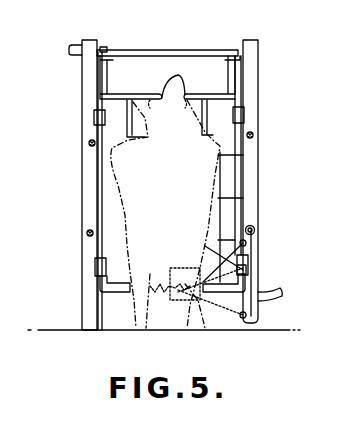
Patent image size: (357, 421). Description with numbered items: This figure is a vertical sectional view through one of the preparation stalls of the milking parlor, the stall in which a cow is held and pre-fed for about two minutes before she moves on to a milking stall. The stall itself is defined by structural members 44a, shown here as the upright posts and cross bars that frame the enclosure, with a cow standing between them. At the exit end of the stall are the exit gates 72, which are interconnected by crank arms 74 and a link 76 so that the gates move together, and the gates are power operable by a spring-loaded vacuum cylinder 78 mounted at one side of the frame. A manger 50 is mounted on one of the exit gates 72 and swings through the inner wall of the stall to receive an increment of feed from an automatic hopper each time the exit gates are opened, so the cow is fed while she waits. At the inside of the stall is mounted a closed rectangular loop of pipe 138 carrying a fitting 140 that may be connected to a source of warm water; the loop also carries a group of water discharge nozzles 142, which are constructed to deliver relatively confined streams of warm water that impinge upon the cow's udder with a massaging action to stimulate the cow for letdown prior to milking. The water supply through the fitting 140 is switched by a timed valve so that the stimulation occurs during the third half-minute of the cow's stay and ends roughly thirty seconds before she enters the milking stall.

The spring-loaded vacuum cylinder 78 is at (72, 45).
The link 76 is at (163, 50).
The crank arms 74 is at (107, 60).
The exit gates 72 is at (176, 78).
The structural members 44a is at (89, 143).
The manger 50 is at (227, 178).
The closed rectangular loop of pipe 138 is at (252, 255).
The fitting 140 is at (283, 292).
The water discharge nozzles 142 is at (240, 243).